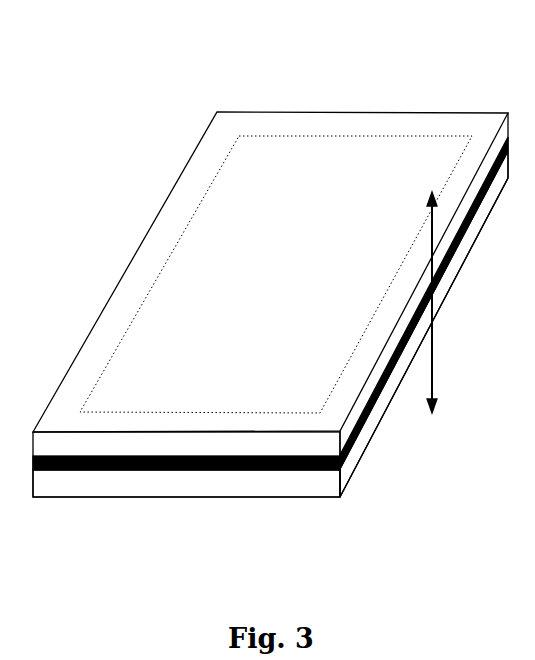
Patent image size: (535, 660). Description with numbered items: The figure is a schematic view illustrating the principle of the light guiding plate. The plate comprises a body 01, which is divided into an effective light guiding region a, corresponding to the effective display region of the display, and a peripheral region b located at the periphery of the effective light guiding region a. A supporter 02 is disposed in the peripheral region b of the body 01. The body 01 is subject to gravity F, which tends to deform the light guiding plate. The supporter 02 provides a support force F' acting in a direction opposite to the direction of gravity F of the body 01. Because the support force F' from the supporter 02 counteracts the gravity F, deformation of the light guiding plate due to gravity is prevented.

The effective light guiding region a is at (276, 217).
The peripheral region b is at (270, 290).
The body 01 is at (270, 365).
The supporter 02 is at (270, 367).
The gravity F is at (434, 323).
The support force F' is at (436, 185).